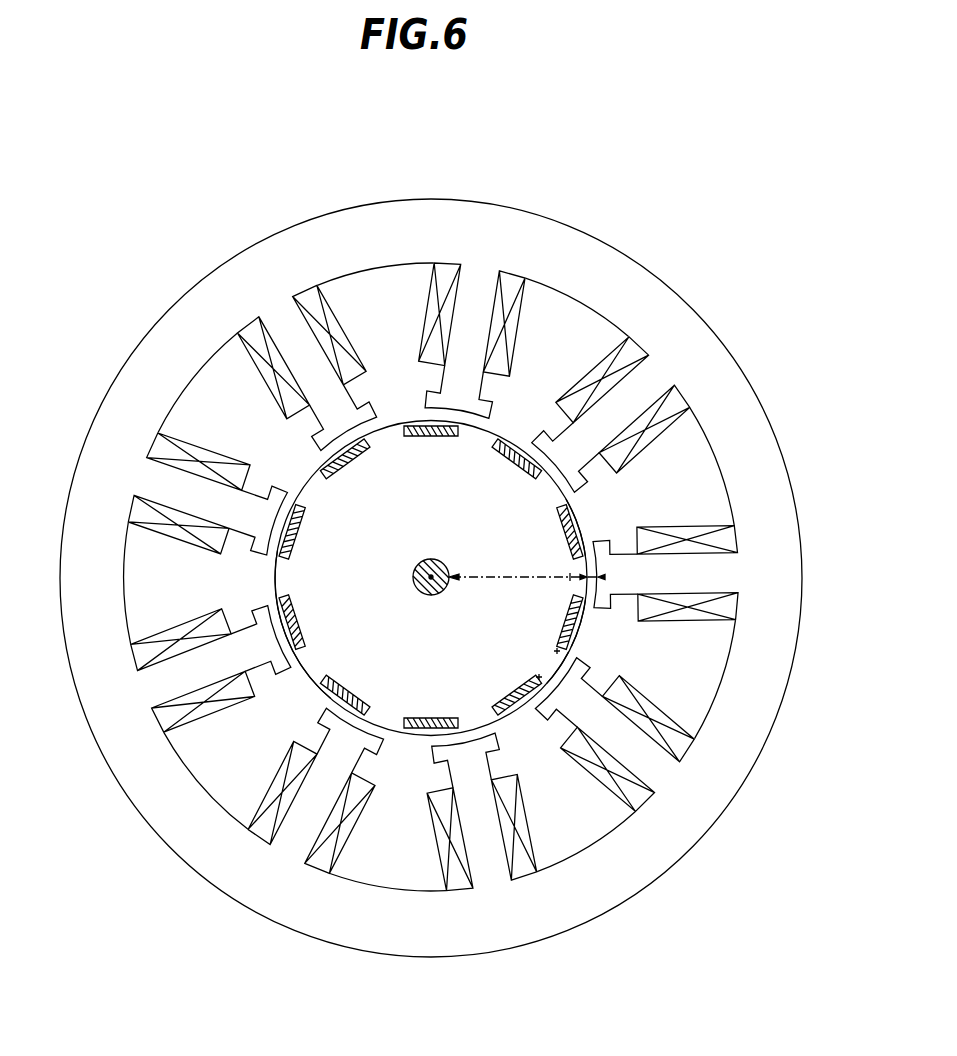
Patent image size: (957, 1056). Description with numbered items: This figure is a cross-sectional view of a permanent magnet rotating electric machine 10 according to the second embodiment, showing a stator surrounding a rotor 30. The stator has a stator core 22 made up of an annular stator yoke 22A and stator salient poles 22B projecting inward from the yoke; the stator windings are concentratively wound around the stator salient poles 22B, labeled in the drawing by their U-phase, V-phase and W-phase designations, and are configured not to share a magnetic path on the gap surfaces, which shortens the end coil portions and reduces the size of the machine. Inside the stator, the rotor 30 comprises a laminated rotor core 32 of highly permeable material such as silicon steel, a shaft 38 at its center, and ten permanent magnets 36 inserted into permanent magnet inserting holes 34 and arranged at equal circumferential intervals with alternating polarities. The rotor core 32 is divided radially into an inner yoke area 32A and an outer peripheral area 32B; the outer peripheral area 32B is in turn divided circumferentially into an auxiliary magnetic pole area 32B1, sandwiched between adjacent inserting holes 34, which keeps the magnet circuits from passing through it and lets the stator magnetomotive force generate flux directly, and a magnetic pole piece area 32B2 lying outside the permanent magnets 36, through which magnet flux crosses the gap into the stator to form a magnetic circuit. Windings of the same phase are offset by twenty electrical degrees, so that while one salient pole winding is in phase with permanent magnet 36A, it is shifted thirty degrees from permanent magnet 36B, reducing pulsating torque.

The rotating electric machine 10 is at (762, 259).
The stator core 22 is at (274, 292).
The annular stator yoke 22A is at (250, 270).
The stator salient poles 22B is at (280, 322).
The rotor 30 is at (381, 624).
The rotor core 32 is at (337, 647).
The inner yoke area 32A is at (527, 560).
The outer peripheral area 32B is at (586, 535).
The auxiliary magnetic pole area 32B1 is at (551, 664).
The magnetic pole piece area 32B2 is at (585, 623).
The permanent magnet inserting holes 34 is at (290, 637).
The permanent magnets 36 is at (298, 642).
The permanent magnet 36A is at (306, 516).
The permanent magnet 36B is at (295, 600).
The shaft 38 is at (427, 596).